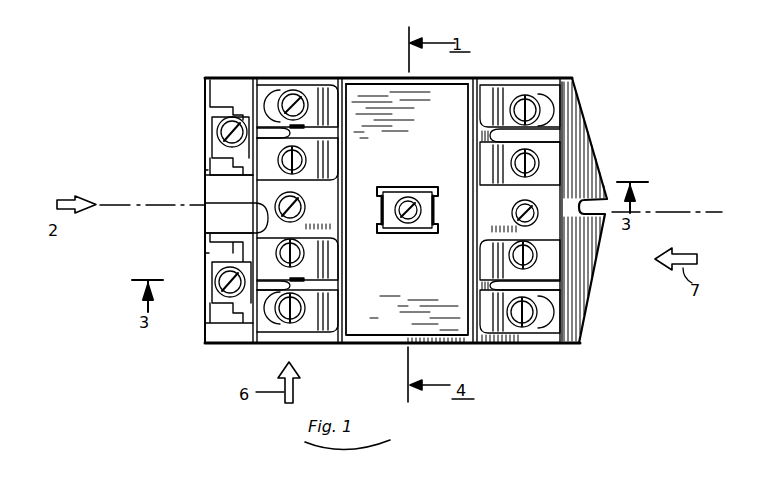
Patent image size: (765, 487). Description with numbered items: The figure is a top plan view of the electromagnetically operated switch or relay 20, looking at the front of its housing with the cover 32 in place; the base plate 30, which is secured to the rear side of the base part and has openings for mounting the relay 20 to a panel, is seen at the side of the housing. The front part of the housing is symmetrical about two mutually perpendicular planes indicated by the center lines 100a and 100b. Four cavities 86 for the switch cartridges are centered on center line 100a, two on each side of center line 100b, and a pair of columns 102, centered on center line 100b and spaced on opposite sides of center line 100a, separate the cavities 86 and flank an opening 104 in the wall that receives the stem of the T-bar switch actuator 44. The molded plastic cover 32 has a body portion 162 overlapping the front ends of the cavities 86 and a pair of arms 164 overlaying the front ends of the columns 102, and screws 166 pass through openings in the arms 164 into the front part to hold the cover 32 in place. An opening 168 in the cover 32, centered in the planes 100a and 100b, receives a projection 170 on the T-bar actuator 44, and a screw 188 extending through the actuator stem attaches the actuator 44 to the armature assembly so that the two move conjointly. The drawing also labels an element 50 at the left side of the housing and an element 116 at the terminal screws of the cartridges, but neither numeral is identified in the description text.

The relay 20 is at (573, 72).
The base plate 30 is at (562, 269).
The cover 32 is at (452, 138).
The T-bar switch actuator 44 is at (440, 214).
The latch member 50 is at (213, 101).
The cavities 86 is at (318, 158).
The columns 102 is at (406, 210).
The opening 104 is at (421, 175).
The terminal screw assembly 116 is at (540, 110).
The body portion 162 is at (389, 93).
The arms 164 is at (266, 226).
The screws 166 is at (272, 197).
The opening 168 is at (433, 188).
The projection 170 is at (396, 233).
The screw 188 is at (405, 228).
The center line 100a is at (412, 68).
The center line 100b is at (669, 212).